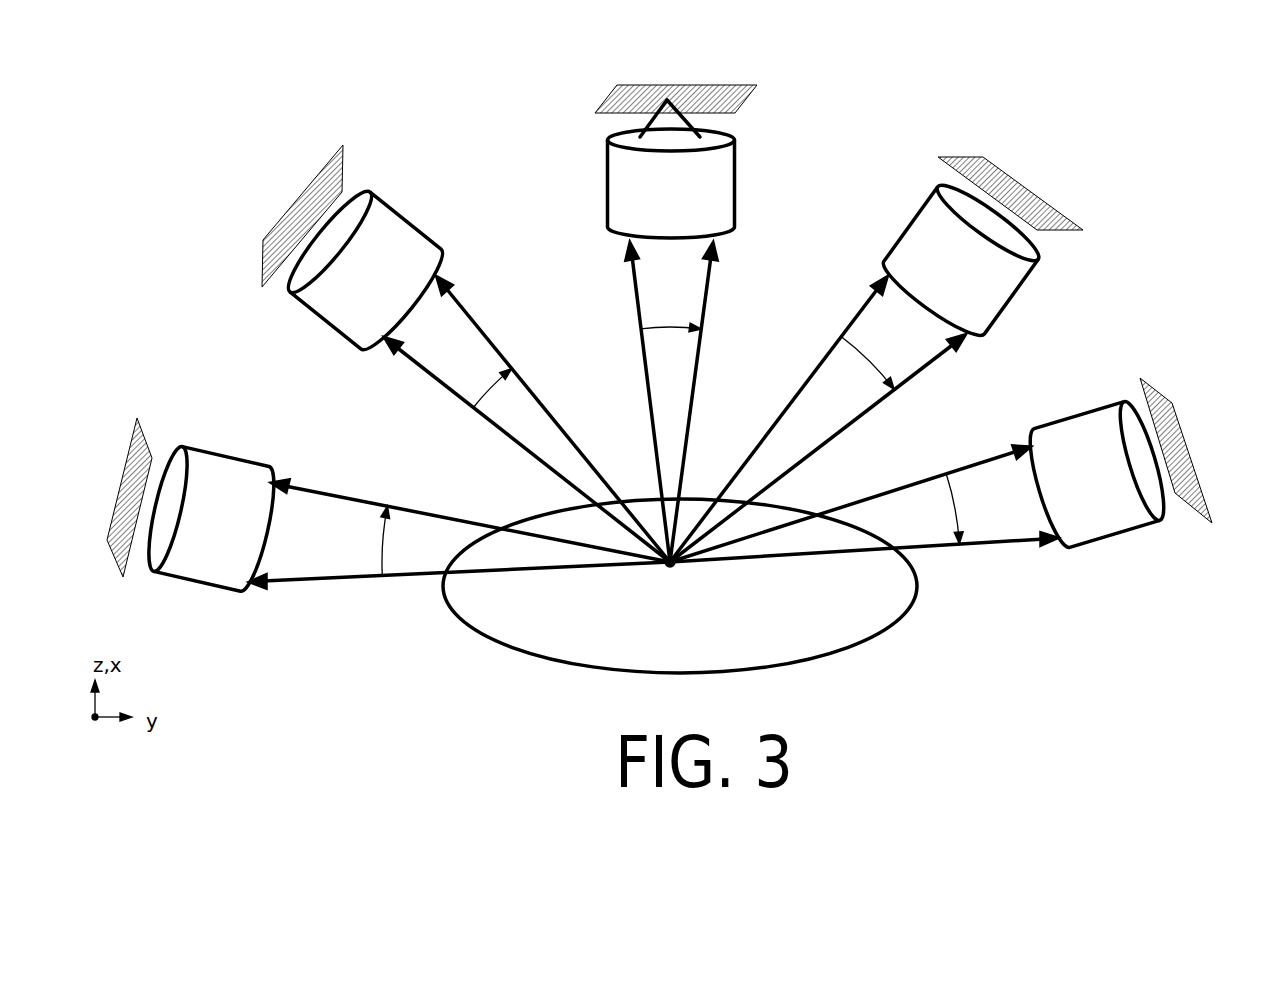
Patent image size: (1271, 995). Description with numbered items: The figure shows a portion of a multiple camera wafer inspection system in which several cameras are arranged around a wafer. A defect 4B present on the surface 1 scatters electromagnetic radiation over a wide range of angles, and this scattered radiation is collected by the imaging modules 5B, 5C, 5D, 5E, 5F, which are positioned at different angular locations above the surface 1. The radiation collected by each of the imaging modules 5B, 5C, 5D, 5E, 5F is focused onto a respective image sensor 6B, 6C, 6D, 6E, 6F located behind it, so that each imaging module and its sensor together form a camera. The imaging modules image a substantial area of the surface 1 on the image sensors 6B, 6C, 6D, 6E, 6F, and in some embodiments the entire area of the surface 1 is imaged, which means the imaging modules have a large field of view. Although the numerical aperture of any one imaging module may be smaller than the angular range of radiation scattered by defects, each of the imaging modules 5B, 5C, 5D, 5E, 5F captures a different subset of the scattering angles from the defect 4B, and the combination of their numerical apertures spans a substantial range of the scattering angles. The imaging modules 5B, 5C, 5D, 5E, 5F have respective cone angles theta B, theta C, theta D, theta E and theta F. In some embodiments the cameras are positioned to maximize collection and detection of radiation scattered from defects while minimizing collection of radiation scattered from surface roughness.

The surface 1 is at (876, 656).
The defect 4B is at (672, 566).
The imaging module 5B is at (213, 452).
The imaging module 5C is at (378, 200).
The imaging module 5D is at (737, 173).
The imaging module 5E is at (1025, 292).
The imaging module 5F is at (1125, 541).
The image sensor 6B is at (137, 420).
The image sensor 6C is at (343, 147).
The image sensor 6D is at (745, 100).
The image sensor 6E is at (1076, 232).
The image sensor 6F is at (1210, 525).